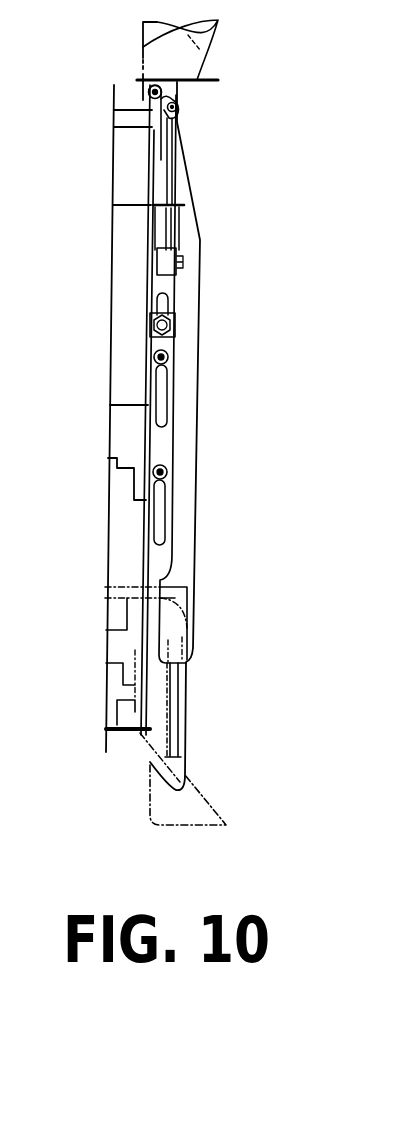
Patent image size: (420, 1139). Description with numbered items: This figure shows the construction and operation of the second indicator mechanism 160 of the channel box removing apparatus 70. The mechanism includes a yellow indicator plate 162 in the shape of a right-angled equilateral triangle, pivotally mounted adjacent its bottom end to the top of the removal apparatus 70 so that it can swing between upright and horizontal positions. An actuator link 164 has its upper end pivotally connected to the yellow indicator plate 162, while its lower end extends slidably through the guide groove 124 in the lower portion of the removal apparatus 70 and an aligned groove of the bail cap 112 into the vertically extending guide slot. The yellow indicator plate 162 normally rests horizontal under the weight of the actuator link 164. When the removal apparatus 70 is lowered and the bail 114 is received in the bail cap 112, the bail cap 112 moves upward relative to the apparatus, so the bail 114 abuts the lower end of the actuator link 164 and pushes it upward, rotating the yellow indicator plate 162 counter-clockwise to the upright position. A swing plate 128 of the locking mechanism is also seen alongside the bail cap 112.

The channel box removing apparatus 70 is at (203, 274).
The yellow indicator plate 162 is at (218, 20).
The second indicator mechanism 160 is at (306, 373).
The actuator link 164 is at (162, 455).
The guide groove 124 is at (190, 557).
The bail 114 is at (186, 702).
The bail cap 112 is at (186, 748).
The swing plate 128 is at (123, 737).